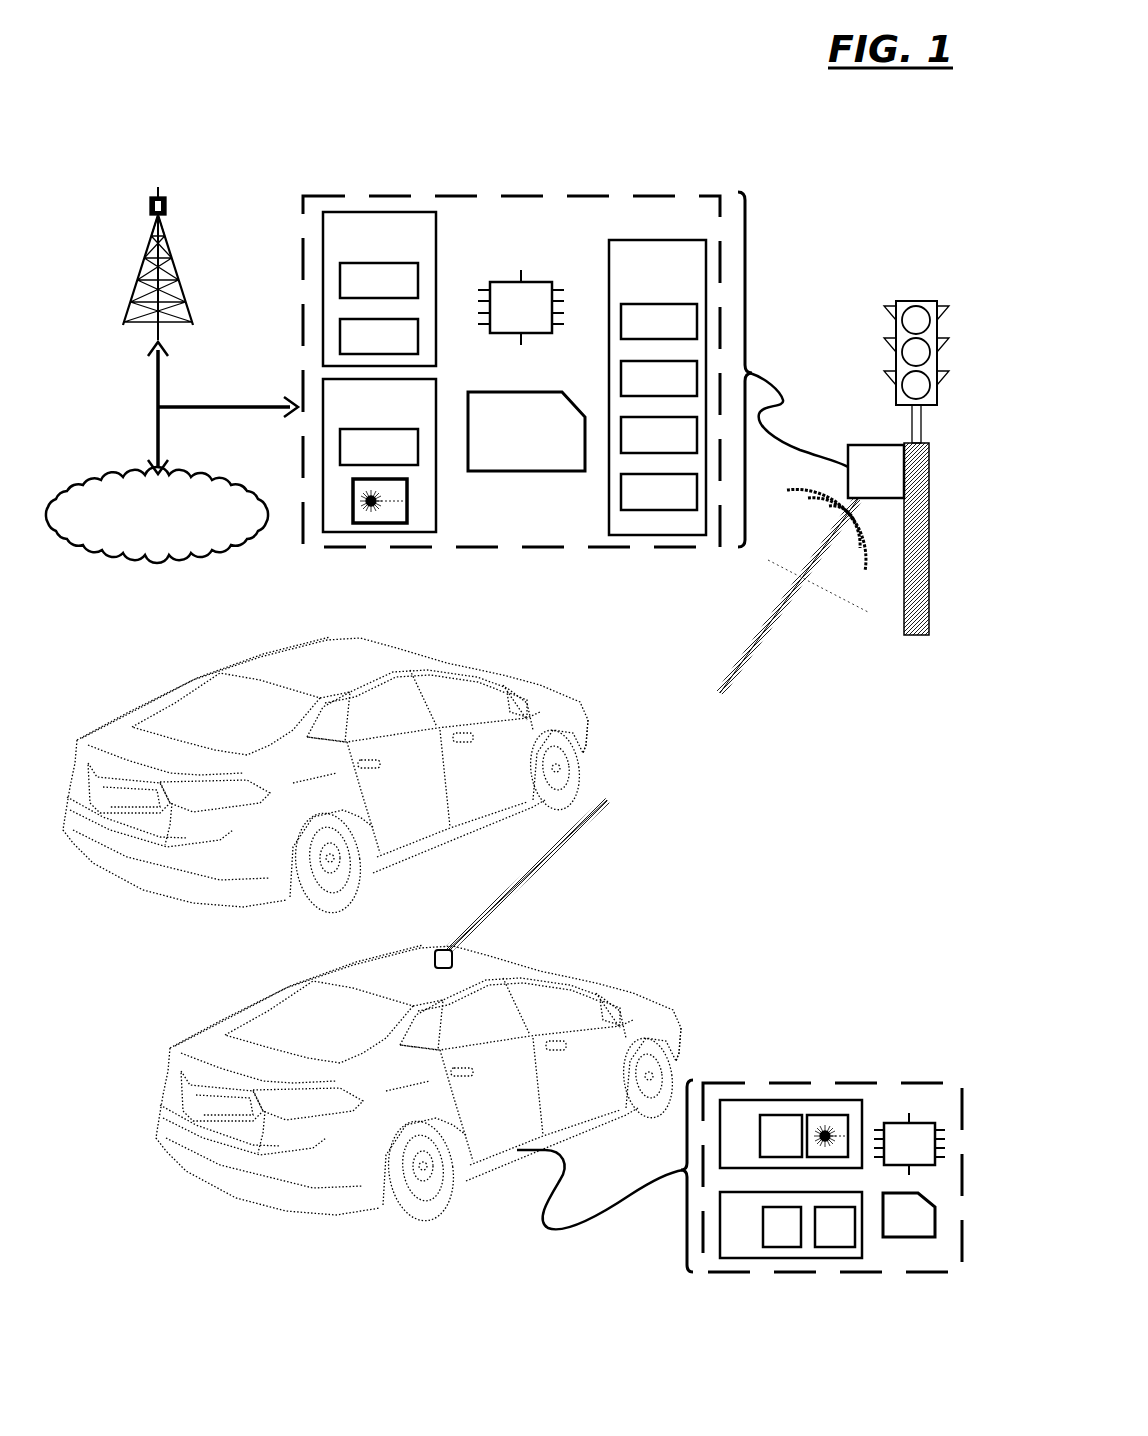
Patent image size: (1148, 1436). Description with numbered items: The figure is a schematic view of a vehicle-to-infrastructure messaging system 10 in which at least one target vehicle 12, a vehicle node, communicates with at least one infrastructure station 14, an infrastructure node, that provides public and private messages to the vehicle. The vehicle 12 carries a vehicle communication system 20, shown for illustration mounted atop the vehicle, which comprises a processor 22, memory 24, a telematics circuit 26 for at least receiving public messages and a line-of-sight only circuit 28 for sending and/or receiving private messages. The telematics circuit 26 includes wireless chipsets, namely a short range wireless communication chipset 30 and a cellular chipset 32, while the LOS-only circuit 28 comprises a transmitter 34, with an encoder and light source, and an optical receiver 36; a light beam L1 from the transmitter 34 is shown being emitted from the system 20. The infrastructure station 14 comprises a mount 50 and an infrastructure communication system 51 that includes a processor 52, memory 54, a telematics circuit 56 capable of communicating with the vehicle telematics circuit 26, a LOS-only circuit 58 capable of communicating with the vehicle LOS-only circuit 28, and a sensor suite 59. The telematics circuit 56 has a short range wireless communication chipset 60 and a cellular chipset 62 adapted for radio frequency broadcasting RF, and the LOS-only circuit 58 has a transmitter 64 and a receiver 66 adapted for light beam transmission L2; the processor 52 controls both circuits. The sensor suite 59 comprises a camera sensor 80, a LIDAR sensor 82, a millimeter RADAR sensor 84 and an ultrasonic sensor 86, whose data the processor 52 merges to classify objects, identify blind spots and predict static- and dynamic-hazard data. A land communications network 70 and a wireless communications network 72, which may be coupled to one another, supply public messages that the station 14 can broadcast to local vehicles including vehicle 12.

The vehicle-to-infrastructure (V2I) messaging system 10 is at (875, 182).
The target vehicle 12 is at (237, 1012).
The infrastructure station 14 is at (873, 296).
The vehicle communication system 20 is at (434, 950).
The processor 22 is at (896, 1156).
The memory 24 is at (896, 1226).
The telematics circuit 26 is at (725, 1238).
The line-of-sight only (LOS-only) circuit 28 is at (725, 1147).
The short range wireless communication (SRWC) chipset 30 is at (769, 1238).
The cellular chipset 32 is at (822, 1238).
The transmitter 34 is at (826, 1115).
The receiver 36 is at (768, 1147).
The mount 50 is at (927, 508).
The infrastructure communication system 51 is at (580, 193).
The processor 52 is at (508, 319).
The memory 54 is at (513, 443).
The telematics circuit 56 is at (367, 250).
The LOS-only circuit 58 is at (367, 417).
The sensor suite 59 is at (644, 277).
The short range wireless communication (SRWC) chipset 60 is at (366, 292).
The cellular chipset 62 is at (366, 348).
The transmitter 64 is at (437, 525).
The receiver 66 is at (366, 459).
The land communications network 70 is at (145, 527).
The wireless communications network 72 is at (143, 258).
The camera sensor 80 is at (646, 333).
The light detection and ranging (LIDAR) sensor 82 is at (646, 390).
The millimeter RADAR sensor 84 is at (646, 447).
The ultrasonic sensor 86 is at (646, 504).
The light beam L1 is at (553, 877).
The light beam transmission L2 is at (750, 673).
The radio frequency broadcasting RF is at (836, 597).